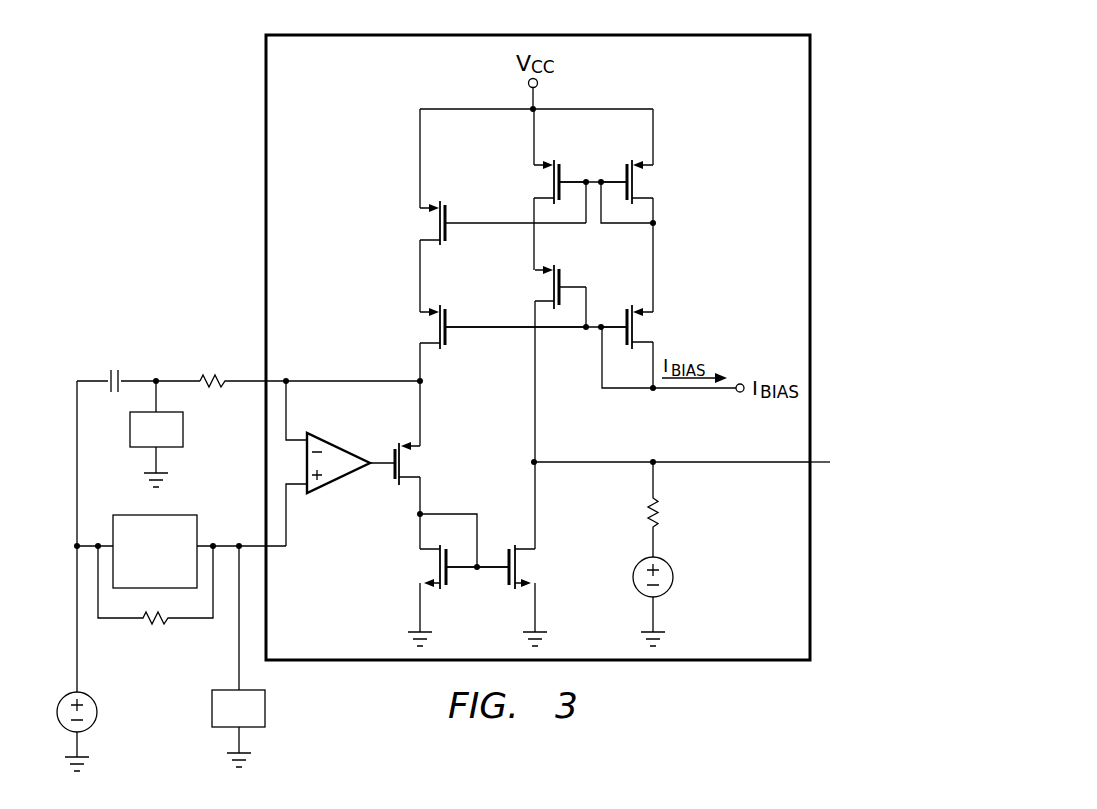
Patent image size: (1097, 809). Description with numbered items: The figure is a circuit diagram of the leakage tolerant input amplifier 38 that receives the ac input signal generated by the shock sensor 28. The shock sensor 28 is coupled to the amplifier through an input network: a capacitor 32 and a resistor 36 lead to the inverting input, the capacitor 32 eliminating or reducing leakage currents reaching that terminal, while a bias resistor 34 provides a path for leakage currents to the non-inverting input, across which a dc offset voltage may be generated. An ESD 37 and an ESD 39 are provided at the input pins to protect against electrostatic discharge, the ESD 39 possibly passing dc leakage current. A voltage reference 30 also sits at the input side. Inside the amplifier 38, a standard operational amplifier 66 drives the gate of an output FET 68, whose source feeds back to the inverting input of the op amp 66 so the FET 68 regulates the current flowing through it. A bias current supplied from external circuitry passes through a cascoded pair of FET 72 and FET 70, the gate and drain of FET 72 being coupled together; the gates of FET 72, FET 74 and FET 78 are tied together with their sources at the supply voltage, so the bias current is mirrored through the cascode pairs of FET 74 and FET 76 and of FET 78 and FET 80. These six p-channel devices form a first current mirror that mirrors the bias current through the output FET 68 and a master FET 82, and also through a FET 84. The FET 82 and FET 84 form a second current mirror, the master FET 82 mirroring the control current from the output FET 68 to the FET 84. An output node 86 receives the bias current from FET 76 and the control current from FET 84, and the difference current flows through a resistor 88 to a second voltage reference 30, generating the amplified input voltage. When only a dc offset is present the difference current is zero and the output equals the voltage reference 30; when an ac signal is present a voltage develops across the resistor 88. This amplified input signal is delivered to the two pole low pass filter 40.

The shock sensor 28 is at (123, 513).
The voltage reference 30 is at (668, 594).
The capacitor 32 is at (113, 370).
The bias resistor 34 is at (155, 622).
The resistor 36 is at (212, 375).
The ESD 37 is at (183, 428).
The leakage tolerant input amplifier 38 is at (793, 73).
The ESD 39 is at (265, 710).
The two pole low pass filter 40 is at (856, 464).
The standard operational amplifier 66 is at (323, 493).
The output FET 68 is at (392, 452).
The FET 70 is at (624, 316).
The FET 72 is at (632, 161).
The FET 74 is at (553, 161).
The FET 76 is at (557, 264).
The FET 78 is at (447, 215).
The FET 80 is at (449, 334).
The master FET 82 is at (449, 573).
The FET 84 is at (509, 526).
The output node 86 is at (541, 459).
The resistor 88 is at (657, 511).